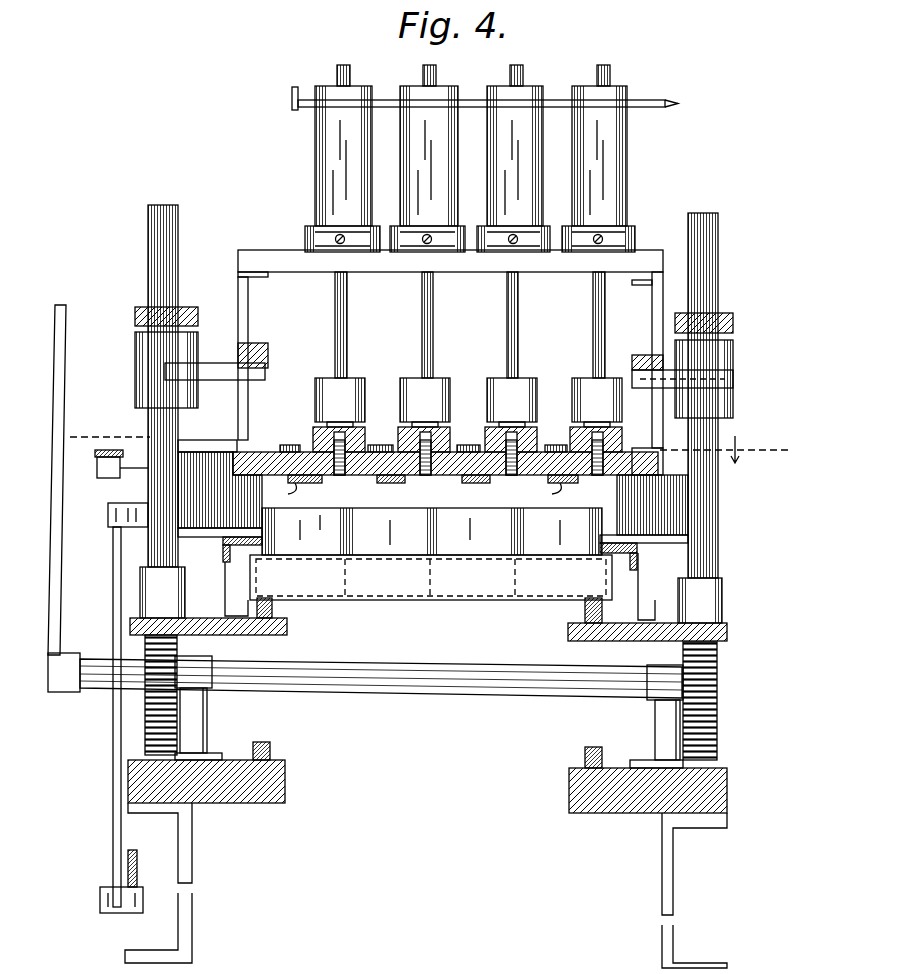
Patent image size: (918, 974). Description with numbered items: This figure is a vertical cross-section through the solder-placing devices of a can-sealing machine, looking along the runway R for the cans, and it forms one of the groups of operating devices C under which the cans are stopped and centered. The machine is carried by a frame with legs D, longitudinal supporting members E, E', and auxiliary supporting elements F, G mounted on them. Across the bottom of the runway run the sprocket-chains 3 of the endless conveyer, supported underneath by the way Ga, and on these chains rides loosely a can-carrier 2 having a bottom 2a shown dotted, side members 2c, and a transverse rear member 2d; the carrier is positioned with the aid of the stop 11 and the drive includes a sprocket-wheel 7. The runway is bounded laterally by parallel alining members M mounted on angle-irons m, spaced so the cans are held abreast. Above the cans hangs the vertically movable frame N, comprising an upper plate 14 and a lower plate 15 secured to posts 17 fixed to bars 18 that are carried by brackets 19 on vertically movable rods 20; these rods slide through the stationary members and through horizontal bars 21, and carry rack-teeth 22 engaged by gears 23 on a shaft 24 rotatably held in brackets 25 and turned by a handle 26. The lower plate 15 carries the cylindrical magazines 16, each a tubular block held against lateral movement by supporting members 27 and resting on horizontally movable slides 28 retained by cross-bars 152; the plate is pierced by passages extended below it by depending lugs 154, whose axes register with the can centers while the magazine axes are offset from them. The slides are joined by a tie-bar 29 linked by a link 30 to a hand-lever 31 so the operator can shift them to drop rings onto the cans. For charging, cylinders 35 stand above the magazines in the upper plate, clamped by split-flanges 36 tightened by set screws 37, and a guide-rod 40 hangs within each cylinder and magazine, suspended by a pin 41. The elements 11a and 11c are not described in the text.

The can-carrier 2 is at (431, 554).
The bottom of the carrier 2a is at (395, 596).
The side members of the carrier 2c is at (240, 580).
The rear member of the carrier 2d is at (478, 545).
The sprocket-chains 3 is at (274, 608).
The sprocket-wheel 7 is at (446, 476).
The stop 11 is at (200, 446).
The rod 11a is at (112, 828).
The rod foot 11c is at (128, 870).
The upper plate 14 is at (388, 262).
The lower plate 15 is at (368, 450).
The cross-bars 152 is at (295, 445).
The depending lugs 154 is at (395, 484).
The cylindrical magazines 16 is at (315, 400).
The posts 17 is at (248, 310).
The bars 18 is at (270, 360).
The brackets 19 is at (224, 360).
The vertically movable rods 20 is at (176, 282).
The horizontal bars 21 is at (140, 310).
The rack-teeth 22 is at (145, 744).
The gears 23 is at (145, 690).
The shaft 24 is at (412, 685).
The brackets 25 is at (195, 716).
The handle 26 is at (58, 640).
The supporting members 27 is at (288, 494).
The slides 28 is at (462, 450).
The tie-bar 29 is at (433, 493).
The link 30 is at (111, 511).
The hand-lever 31 is at (108, 450).
The cylinders 35 is at (338, 140).
The split-flanges 36 is at (305, 236).
The set screws 37 is at (345, 236).
The guide-rod 40 is at (423, 72).
The pin 41 is at (470, 96).
The group of operating devices C is at (430, 438).
The legs D is at (190, 866).
The supporting member E is at (206, 815).
The supporting member E' is at (648, 819).
The auxiliary supporting element F is at (600, 632).
The auxiliary supporting element G is at (285, 616).
The way Ga is at (287, 626).
The lateral alining members M is at (608, 506).
The angle-irons m is at (222, 602).
The vertically movable frame N is at (465, 297).
The runway R is at (472, 637).